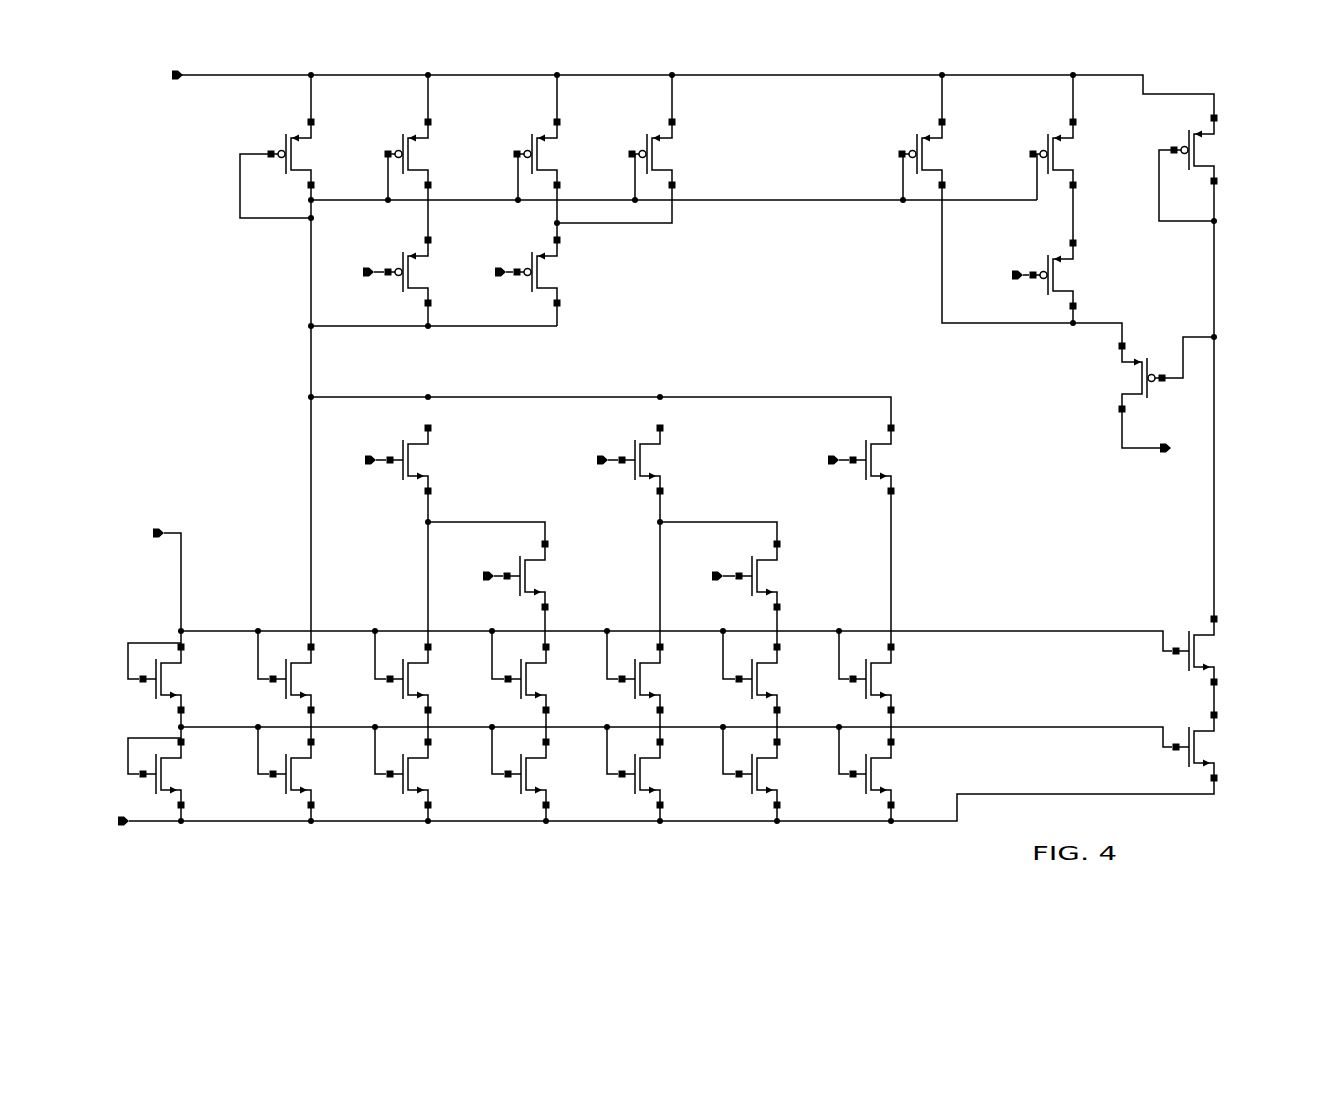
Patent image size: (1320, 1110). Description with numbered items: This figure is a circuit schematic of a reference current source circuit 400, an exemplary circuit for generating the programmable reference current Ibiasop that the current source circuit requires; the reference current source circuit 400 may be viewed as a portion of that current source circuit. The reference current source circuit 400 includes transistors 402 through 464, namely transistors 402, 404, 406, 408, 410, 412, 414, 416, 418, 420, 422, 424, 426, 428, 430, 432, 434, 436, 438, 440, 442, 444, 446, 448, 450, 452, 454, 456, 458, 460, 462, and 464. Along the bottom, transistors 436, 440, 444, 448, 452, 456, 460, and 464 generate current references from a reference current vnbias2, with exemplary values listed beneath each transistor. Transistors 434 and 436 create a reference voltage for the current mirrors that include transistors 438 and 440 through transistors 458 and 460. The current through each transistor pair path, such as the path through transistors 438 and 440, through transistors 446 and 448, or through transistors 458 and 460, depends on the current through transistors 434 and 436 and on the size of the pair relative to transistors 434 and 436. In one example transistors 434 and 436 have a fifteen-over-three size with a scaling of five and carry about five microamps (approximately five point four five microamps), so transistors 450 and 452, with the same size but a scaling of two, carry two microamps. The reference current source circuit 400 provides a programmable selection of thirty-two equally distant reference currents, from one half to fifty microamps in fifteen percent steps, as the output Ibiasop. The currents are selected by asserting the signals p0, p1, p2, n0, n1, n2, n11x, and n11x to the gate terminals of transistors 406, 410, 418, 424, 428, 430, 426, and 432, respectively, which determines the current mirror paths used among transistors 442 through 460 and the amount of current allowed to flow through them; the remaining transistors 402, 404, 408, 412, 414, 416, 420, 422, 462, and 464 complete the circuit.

The reference current source circuit 400 is at (196, 384).
The transistor 402 is at (303, 125).
The transistor 404 is at (420, 125).
The transistor 406 is at (420, 243).
The transistor 408 is at (549, 125).
The transistor 410 is at (549, 243).
The transistor 412 is at (664, 125).
The transistor 414 is at (934, 125).
The transistor 416 is at (1065, 125).
The transistor 418 is at (1065, 246).
The transistor 420 is at (1207, 125).
The transistor 422 is at (1068, 387).
The transistor 424 is at (419, 440).
The transistor 426 is at (537, 556).
The transistor 428 is at (651, 440).
The transistor 430 is at (882, 440).
The transistor 432 is at (769, 556).
The transistor 434 is at (156, 695).
The transistor 436 is at (156, 790).
The transistor 438 is at (286, 695).
The transistor 440 is at (286, 790).
The transistor 442 is at (403, 695).
The transistor 444 is at (403, 790).
The transistor 446 is at (521, 695).
The transistor 448 is at (521, 790).
The transistor 450 is at (635, 695).
The transistor 452 is at (635, 790).
The transistor 454 is at (752, 695).
The transistor 456 is at (752, 790).
The transistor 458 is at (866, 695).
The transistor 460 is at (866, 790).
The transistor 462 is at (1189, 662).
The transistor 464 is at (1189, 757).